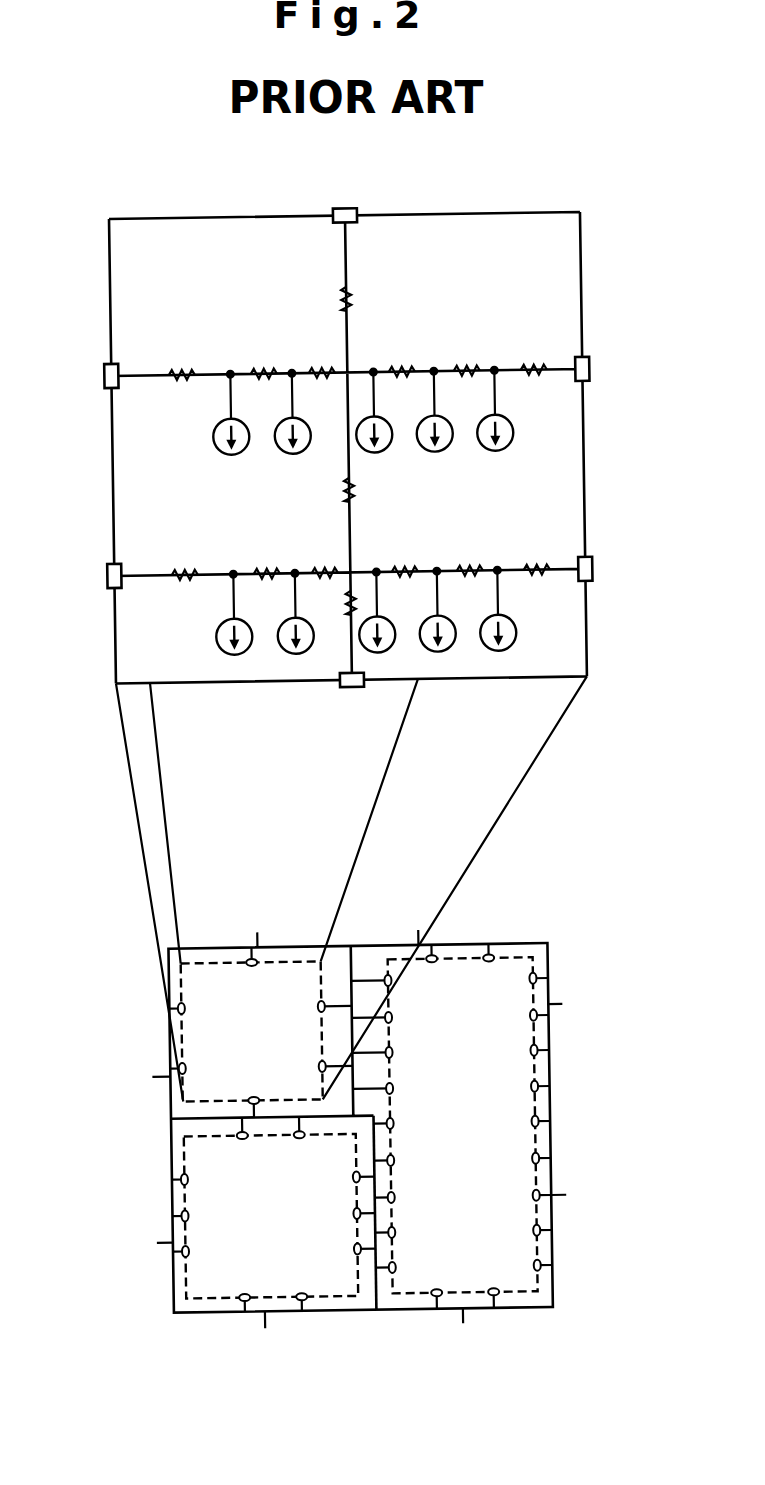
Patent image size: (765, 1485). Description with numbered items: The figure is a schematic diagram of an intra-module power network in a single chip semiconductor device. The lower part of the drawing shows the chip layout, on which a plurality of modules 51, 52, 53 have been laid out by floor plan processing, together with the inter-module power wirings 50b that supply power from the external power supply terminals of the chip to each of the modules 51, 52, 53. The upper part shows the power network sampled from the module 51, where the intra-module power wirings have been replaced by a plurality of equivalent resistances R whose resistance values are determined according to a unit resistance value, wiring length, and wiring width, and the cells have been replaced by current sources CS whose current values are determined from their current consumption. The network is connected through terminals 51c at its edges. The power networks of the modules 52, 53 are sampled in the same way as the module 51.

The module 51 is at (524, 214).
The connection terminal 51c is at (348, 209).
The equivalent resistance R is at (361, 296).
The current source CS is at (232, 453).
The inter-module power wiring 50b is at (537, 946).
The module 52 is at (173, 1267).
The module 53 is at (547, 1042).